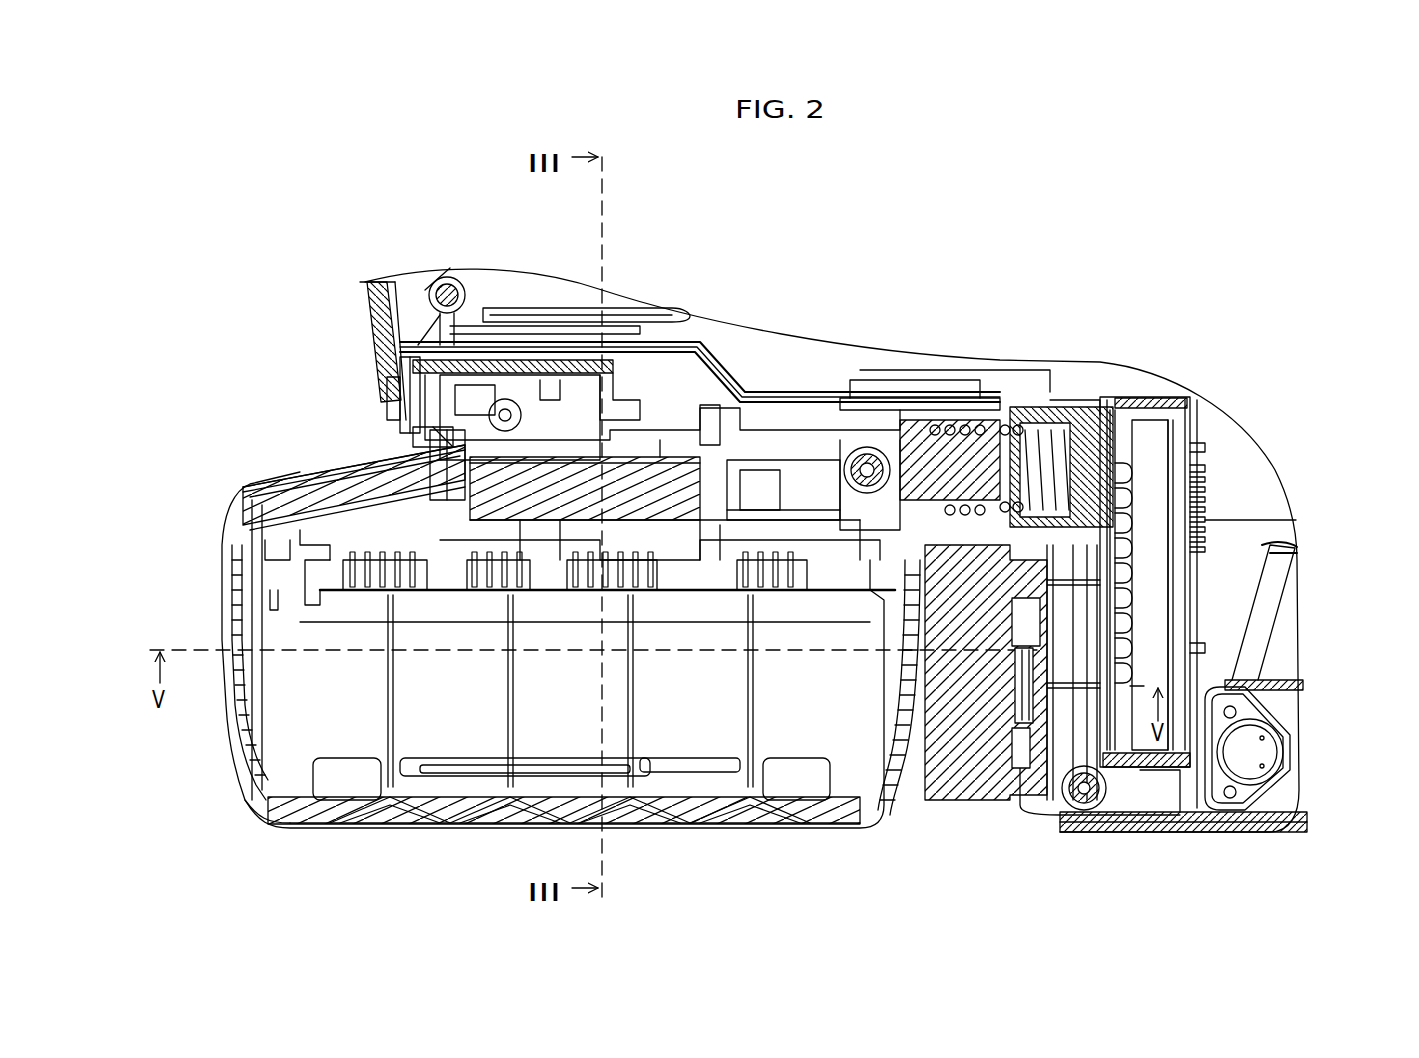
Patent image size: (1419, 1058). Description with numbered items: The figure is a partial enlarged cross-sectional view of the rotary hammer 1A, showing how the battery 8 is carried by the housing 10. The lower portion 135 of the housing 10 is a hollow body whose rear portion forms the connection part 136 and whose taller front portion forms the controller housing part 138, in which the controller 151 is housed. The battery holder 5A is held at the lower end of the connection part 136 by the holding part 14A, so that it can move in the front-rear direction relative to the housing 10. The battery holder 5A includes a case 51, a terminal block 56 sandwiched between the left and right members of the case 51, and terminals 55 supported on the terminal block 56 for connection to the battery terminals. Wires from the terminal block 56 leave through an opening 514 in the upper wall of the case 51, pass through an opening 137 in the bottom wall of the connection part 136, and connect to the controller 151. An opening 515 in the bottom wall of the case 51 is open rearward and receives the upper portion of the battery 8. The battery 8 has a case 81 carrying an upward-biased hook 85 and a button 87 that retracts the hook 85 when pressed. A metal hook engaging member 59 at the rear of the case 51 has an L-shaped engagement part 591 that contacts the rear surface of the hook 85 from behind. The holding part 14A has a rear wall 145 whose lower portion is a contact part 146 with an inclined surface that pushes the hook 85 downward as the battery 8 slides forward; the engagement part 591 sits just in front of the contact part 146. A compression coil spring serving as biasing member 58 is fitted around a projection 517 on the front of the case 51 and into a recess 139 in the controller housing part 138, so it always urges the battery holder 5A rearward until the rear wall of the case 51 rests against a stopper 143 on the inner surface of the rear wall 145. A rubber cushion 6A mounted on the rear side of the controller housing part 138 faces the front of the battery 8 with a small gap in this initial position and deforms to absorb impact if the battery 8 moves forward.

The rotary hammer 1A is at (1195, 232).
The housing 10 is at (1270, 376).
The holding part 14A is at (352, 337).
The stopper 143 is at (398, 380).
The rear wall 145 is at (387, 408).
The contact part 146 is at (395, 432).
The button 87 is at (300, 472).
The battery 8 is at (507, 662).
The hook 85 is at (443, 440).
The case 81 is at (275, 812).
The engagement part 591 is at (425, 335).
The hook engaging member 59 is at (455, 380).
The connection part 136 is at (638, 300).
The battery holder 5A is at (697, 388).
The case 51 is at (658, 420).
The terminal block 56 is at (714, 470).
The terminals 55 is at (745, 487).
The opening 514 is at (840, 398).
The opening 137 is at (920, 400).
The projection 517 is at (955, 462).
The biasing member 58 is at (1027, 440).
The recess 139 is at (1115, 400).
The controller 151 is at (1175, 555).
The controller housing part 138 is at (1300, 633).
The lower portion 135 is at (1305, 765).
The opening 515 is at (812, 560).
The cushion 6A is at (972, 808).